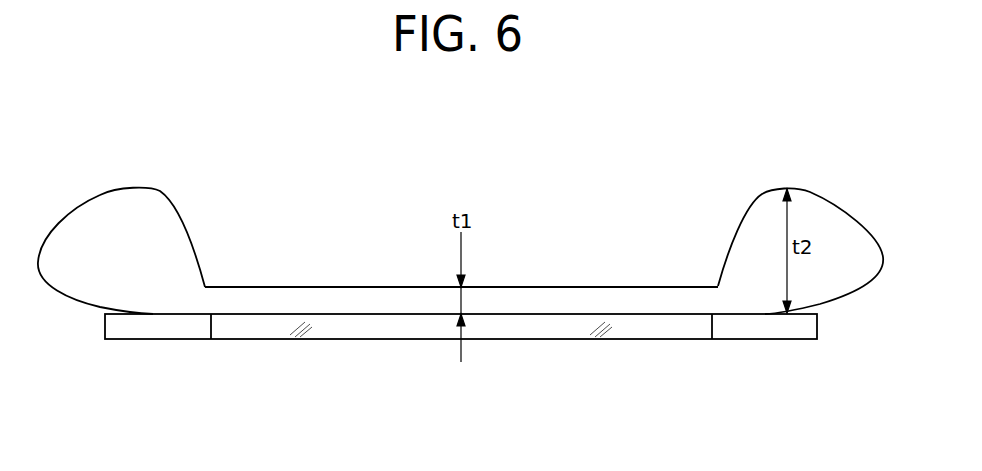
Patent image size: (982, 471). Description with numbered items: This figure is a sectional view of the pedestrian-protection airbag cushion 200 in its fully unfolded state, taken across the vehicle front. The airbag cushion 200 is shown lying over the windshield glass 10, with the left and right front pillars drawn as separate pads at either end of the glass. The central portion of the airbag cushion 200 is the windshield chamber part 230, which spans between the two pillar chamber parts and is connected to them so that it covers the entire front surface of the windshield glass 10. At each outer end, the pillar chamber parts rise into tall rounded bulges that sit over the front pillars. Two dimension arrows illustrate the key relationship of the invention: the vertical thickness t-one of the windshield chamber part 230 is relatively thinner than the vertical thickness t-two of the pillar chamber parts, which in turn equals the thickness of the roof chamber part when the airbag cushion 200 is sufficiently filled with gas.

The windshield glass 10 is at (510, 330).
The airbag cushion 200 is at (460, 204).
The windshield chamber part 230 is at (566, 300).